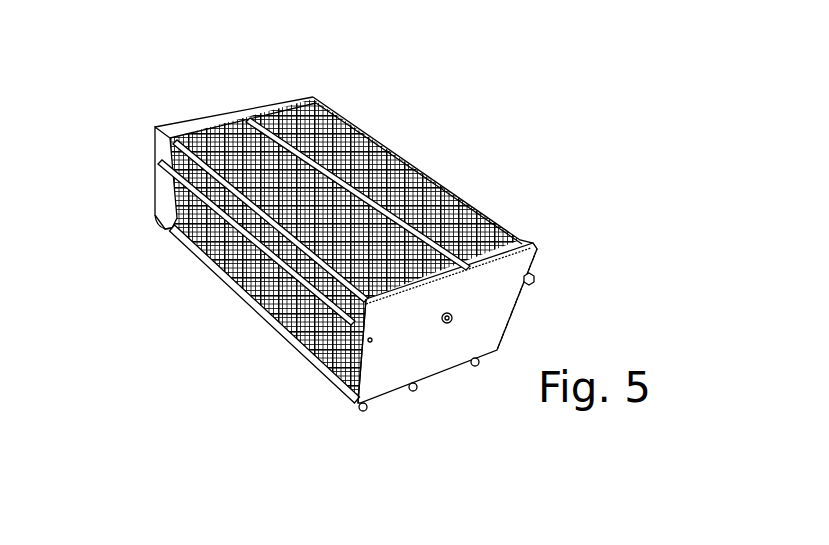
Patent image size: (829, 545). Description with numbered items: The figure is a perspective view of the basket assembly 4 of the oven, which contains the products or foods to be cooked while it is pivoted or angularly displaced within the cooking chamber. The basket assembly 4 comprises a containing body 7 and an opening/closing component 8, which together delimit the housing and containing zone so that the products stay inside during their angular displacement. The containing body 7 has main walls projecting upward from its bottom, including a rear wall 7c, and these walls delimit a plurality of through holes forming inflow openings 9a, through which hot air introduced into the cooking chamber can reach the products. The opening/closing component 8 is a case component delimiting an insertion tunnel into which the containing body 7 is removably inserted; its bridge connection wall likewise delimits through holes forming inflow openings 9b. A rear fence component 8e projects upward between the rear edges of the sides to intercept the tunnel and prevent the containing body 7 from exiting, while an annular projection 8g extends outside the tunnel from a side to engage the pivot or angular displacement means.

The basket assembly 4 is at (503, 224).
The containing body 7 is at (317, 327).
The rear wall 7c is at (213, 228).
The opening/closing component 8 is at (313, 98).
The rear fence component 8e is at (347, 320).
The projection 8g is at (449, 324).
The inflow openings 9a is at (258, 265).
The inflow openings 9b is at (395, 200).